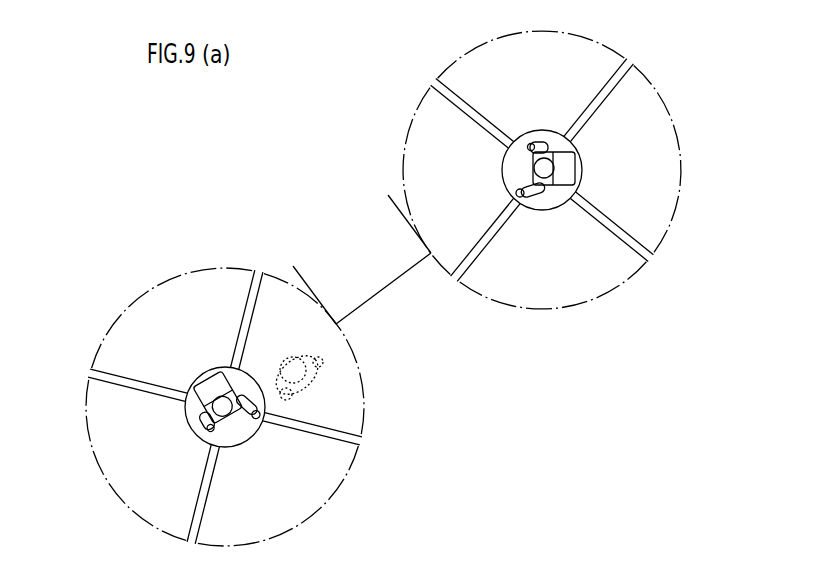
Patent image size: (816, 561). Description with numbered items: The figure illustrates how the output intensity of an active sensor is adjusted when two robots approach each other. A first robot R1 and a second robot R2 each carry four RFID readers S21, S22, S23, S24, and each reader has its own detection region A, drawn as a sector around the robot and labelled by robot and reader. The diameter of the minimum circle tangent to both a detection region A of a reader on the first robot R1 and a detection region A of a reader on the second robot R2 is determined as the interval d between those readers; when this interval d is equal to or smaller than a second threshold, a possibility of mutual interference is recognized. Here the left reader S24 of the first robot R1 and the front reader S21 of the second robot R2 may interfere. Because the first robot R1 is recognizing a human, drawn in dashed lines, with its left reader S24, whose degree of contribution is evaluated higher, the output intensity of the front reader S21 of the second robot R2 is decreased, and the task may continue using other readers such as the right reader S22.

The first robot R1 is at (155, 371).
The second robot R2 is at (472, 137).
The detection region A is at (402, 285).
The RFID reader disposed at the front side S21 is at (354, 315).
The right RFID reader S22 is at (332, 284).
The RFID reader S23 is at (419, 228).
The left RFID reader S24 is at (468, 317).
The interval d is at (362, 259).